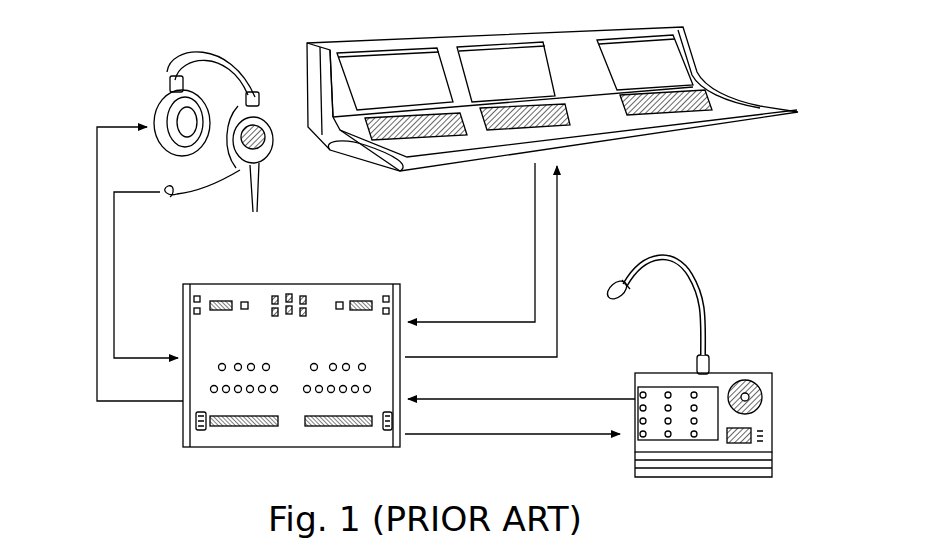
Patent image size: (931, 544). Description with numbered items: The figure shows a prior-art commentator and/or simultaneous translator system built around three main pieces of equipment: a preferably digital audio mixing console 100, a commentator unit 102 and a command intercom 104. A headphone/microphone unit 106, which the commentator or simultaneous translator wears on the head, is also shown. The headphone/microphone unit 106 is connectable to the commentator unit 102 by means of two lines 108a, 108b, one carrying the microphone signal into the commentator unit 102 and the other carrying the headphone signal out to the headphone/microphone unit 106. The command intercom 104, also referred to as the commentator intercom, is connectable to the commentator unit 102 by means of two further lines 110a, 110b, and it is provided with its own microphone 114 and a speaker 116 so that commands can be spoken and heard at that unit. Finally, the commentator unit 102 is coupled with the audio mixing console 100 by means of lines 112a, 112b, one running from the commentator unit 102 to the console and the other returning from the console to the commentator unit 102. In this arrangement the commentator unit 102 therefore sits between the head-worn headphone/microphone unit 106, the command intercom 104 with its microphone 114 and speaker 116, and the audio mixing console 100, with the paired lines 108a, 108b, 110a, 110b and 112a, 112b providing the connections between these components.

The audio mixing console 100 is at (702, 135).
The commentator unit 102 is at (352, 284).
The command intercom 104 is at (726, 372).
The headphone/microphone unit 106 is at (165, 64).
The line 108a is at (120, 253).
The line 108b is at (97, 226).
The line 110a is at (440, 434).
The line 110b is at (575, 399).
The line 112a is at (535, 213).
The line 112b is at (557, 212).
The microphone 114 is at (700, 275).
The speaker 116 is at (773, 405).